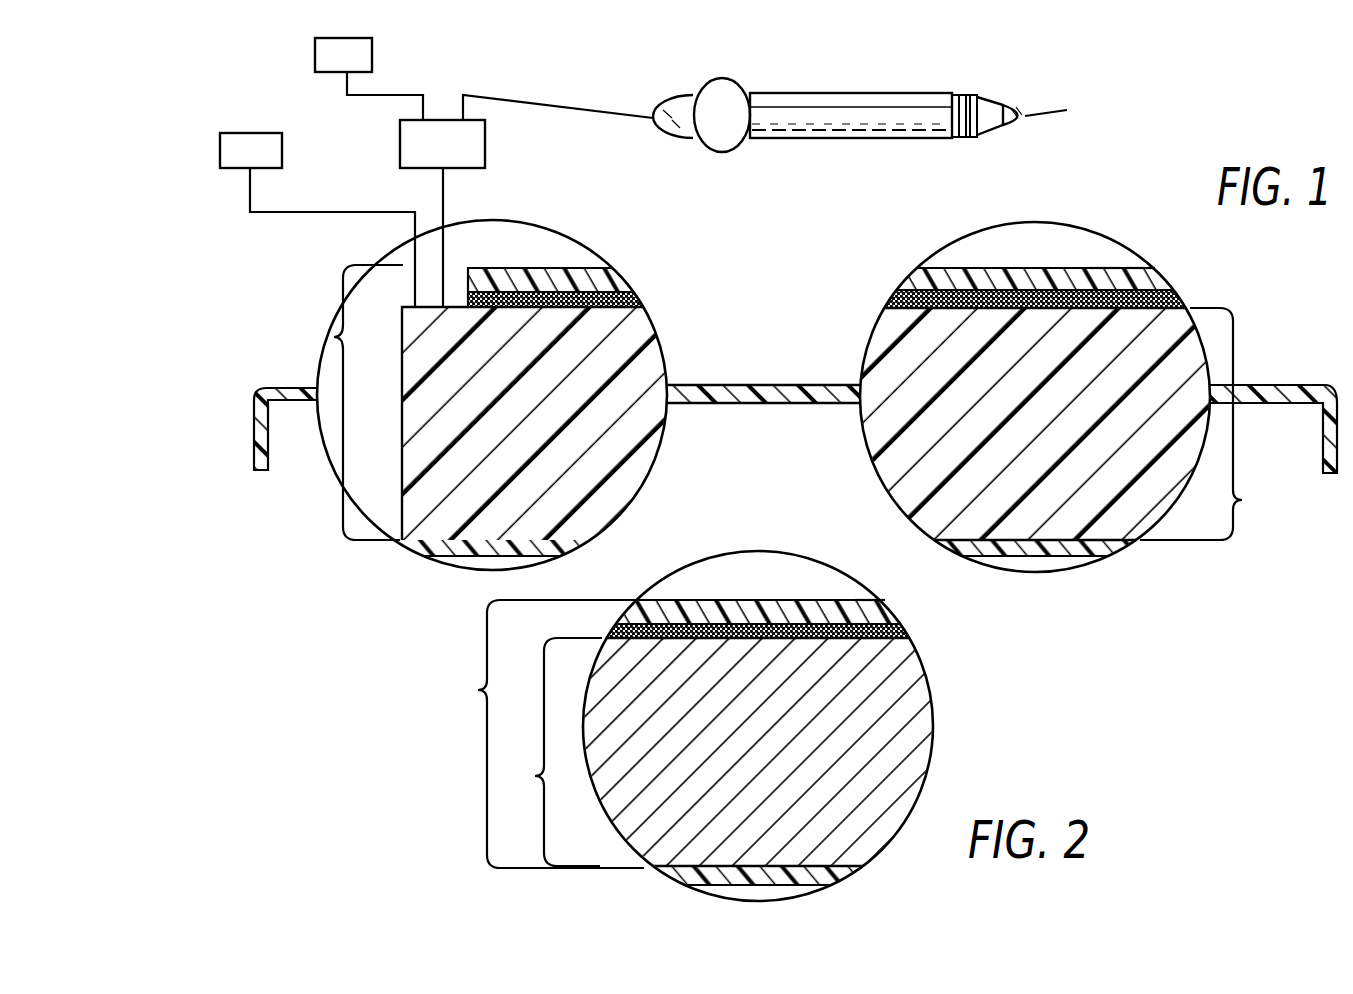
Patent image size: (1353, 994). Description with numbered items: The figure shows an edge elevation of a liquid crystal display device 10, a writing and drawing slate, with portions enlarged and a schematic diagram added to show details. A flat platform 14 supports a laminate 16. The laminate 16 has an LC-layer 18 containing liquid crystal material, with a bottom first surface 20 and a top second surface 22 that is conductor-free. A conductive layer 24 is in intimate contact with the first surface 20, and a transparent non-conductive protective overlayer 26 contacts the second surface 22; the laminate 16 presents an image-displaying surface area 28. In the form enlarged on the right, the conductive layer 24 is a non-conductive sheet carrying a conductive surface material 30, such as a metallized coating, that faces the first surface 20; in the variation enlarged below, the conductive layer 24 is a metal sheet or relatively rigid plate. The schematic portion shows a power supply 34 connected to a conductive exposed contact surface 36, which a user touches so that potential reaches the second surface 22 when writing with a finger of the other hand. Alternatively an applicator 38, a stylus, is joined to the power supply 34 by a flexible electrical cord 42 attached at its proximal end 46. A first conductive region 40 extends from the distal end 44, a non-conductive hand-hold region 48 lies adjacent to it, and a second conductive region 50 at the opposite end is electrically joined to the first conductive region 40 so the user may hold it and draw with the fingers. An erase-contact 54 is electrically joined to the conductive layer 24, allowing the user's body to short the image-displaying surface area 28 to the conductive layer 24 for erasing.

In FIG. 1, the liquid crystal display device 10 is at (763, 275).
In FIG. 1, the flat platform 14 is at (255, 410).
In FIG. 2, the flat platform 14 is at (811, 879).
In FIG. 1, the laminate 16 is at (334, 337).
In FIG. 2, the laminate 16 is at (478, 690).
In FIG. 1, the LC-layer 18 is at (1023, 288).
In FIG. 2, the LC-layer 18 is at (761, 629).
In FIG. 1, the first surface 20 is at (893, 312).
In FIG. 2, the first surface 20 is at (889, 638).
In FIG. 1, the second surface 22 is at (915, 297).
In FIG. 2, the second surface 22 is at (881, 620).
In FIG. 1, the conductive layer 24 is at (1242, 500).
In FIG. 2, the conductive layer 24 is at (535, 776).
In FIG. 1, the transparent non-conductive protective overlayer 26 is at (1103, 272).
In FIG. 2, the transparent non-conductive protective overlayer 26 is at (868, 609).
In FIG. 1, the image-displaying surface area 28 is at (982, 268).
In FIG. 1, the conductive surface material 30 is at (1140, 272).
In FIG. 1, the power supply 34 is at (475, 142).
In FIG. 1, the conductive exposed contact surface 36 is at (328, 48).
In FIG. 1, the applicator 38 is at (849, 91).
In FIG. 1, the first conductive region 40 is at (1007, 102).
In FIG. 1, the flexible electrical cord 42 is at (558, 103).
In FIG. 1, the distal end 44 is at (1065, 105).
In FIG. 1, the proximal end 46 is at (655, 115).
In FIG. 1, the non-conductive hand-hold region 48 is at (870, 105).
In FIG. 1, the second conductive region 50 is at (683, 92).
In FIG. 1, the erase-contact 54 is at (248, 138).